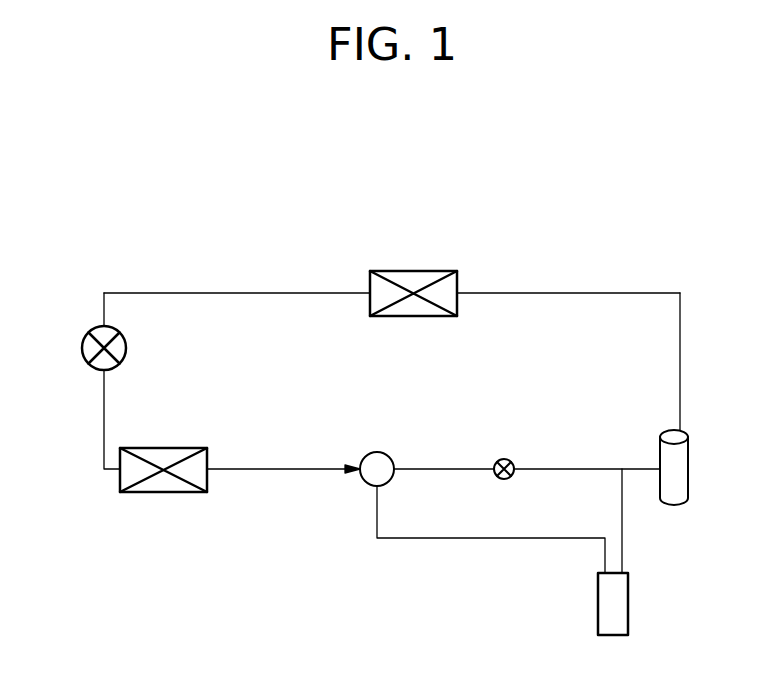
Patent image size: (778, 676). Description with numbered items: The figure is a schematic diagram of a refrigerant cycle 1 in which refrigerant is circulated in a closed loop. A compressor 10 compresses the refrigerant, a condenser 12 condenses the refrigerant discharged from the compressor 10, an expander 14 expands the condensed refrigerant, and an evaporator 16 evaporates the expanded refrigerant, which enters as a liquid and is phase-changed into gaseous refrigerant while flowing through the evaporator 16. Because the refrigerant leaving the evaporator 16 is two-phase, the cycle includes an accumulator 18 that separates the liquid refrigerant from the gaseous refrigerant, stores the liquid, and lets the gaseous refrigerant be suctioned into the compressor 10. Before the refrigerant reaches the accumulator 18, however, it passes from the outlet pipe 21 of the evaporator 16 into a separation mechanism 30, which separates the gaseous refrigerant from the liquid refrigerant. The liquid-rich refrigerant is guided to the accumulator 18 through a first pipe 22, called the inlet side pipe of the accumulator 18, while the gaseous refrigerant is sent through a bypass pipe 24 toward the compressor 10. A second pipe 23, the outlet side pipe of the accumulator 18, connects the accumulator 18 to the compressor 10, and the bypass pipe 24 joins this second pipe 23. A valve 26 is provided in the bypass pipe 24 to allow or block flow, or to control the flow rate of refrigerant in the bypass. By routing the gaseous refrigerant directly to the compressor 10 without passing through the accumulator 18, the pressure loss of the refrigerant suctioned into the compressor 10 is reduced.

The refrigerant cycle 1 is at (527, 180).
The compressor 10 is at (689, 473).
The condenser 12 is at (413, 270).
The expander 14 is at (82, 346).
The evaporator 16 is at (171, 447).
The accumulator 18 is at (629, 602).
The outlet pipe 21 is at (270, 472).
The first pipe 22 is at (474, 540).
The second pipe 23 is at (623, 534).
The bypass pipe 24 is at (442, 468).
The valve 26 is at (504, 458).
The separation mechanism 30 is at (375, 451).